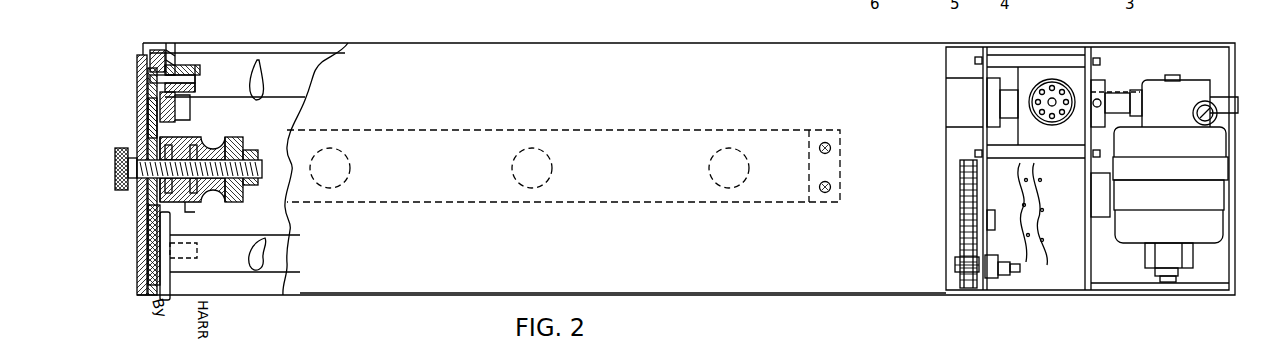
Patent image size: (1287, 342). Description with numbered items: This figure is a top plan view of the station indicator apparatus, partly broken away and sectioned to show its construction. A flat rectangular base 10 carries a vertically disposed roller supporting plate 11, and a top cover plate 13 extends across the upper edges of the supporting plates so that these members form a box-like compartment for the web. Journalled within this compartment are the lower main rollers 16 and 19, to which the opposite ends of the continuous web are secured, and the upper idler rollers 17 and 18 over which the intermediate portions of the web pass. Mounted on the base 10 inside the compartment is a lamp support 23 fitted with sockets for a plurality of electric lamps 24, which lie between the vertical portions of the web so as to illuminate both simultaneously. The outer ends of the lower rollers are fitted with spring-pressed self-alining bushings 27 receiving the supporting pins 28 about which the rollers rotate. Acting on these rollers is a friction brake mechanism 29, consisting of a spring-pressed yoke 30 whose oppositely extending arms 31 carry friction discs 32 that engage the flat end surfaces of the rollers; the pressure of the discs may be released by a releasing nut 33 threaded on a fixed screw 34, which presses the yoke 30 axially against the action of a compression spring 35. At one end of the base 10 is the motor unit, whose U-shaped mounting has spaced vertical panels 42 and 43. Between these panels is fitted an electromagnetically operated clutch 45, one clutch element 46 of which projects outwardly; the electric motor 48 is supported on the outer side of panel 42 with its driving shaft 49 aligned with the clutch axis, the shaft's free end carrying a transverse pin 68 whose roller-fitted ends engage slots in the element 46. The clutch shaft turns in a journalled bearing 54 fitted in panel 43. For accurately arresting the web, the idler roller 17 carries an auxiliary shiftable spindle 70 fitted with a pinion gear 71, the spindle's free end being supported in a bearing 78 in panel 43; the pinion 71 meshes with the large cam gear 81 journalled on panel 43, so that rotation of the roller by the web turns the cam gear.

The base 10 is at (258, 291).
The roller supporting plate 11 is at (145, 48).
The top cover plate 13 is at (375, 293).
The roller 16 is at (212, 245).
The idler roller 17 is at (266, 245).
The idler roller 18 is at (277, 97).
The roller 19 is at (223, 93).
The lamp support 23 is at (380, 128).
The electric lamps 24 is at (332, 148).
The bushing 27 is at (190, 68).
The supporting pin 28 is at (184, 62).
The friction brake mechanism 29 is at (186, 130).
The yoke 30 is at (186, 205).
The arm 31 is at (148, 108).
The friction disc 32 is at (170, 58).
The releasing nut 33 is at (246, 140).
The fixed screw 34 is at (260, 183).
The compression spring 35 is at (203, 140).
The vertical panel 42 is at (1090, 245).
The vertical panel 43 is at (995, 225).
The electromagnetically operated clutch 45 is at (1040, 283).
The clutch element 46 is at (1097, 85).
The electric motor 48 is at (1197, 168).
The driving shaft 49 is at (1121, 100).
The journalled bearing 54 is at (966, 168).
The pin 68 is at (1095, 108).
The auxiliary shiftable spindle 70 is at (1015, 272).
The pinion gear 71 is at (958, 272).
The bearing 78 is at (994, 278).
The cam gear 81 is at (962, 200).